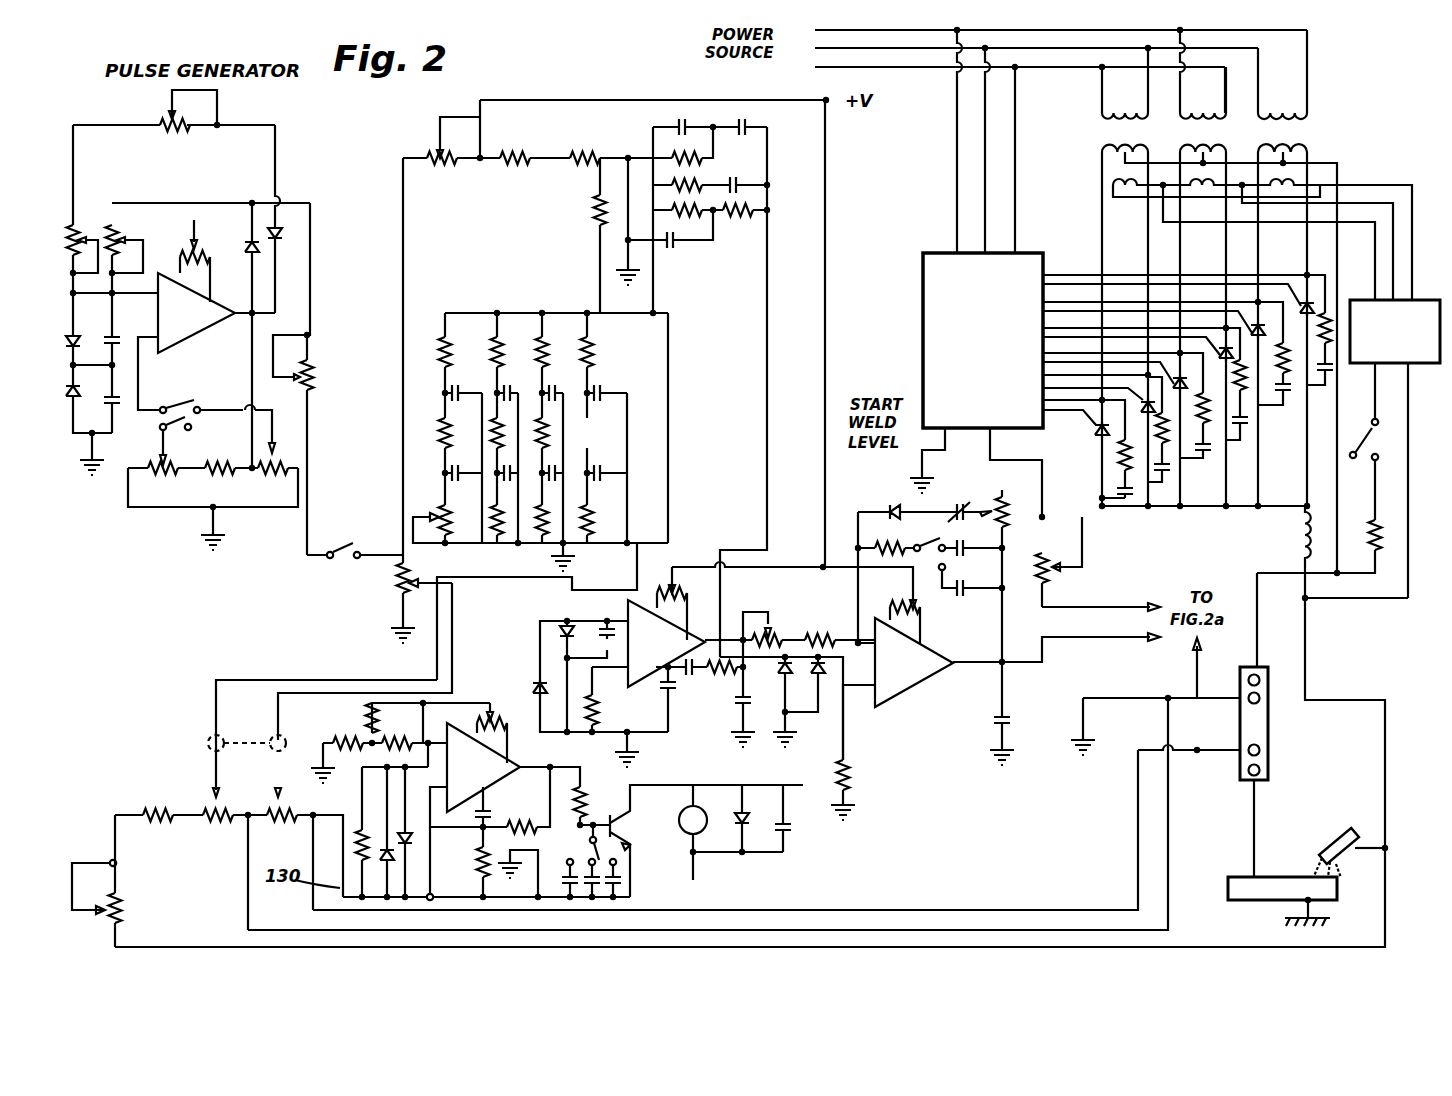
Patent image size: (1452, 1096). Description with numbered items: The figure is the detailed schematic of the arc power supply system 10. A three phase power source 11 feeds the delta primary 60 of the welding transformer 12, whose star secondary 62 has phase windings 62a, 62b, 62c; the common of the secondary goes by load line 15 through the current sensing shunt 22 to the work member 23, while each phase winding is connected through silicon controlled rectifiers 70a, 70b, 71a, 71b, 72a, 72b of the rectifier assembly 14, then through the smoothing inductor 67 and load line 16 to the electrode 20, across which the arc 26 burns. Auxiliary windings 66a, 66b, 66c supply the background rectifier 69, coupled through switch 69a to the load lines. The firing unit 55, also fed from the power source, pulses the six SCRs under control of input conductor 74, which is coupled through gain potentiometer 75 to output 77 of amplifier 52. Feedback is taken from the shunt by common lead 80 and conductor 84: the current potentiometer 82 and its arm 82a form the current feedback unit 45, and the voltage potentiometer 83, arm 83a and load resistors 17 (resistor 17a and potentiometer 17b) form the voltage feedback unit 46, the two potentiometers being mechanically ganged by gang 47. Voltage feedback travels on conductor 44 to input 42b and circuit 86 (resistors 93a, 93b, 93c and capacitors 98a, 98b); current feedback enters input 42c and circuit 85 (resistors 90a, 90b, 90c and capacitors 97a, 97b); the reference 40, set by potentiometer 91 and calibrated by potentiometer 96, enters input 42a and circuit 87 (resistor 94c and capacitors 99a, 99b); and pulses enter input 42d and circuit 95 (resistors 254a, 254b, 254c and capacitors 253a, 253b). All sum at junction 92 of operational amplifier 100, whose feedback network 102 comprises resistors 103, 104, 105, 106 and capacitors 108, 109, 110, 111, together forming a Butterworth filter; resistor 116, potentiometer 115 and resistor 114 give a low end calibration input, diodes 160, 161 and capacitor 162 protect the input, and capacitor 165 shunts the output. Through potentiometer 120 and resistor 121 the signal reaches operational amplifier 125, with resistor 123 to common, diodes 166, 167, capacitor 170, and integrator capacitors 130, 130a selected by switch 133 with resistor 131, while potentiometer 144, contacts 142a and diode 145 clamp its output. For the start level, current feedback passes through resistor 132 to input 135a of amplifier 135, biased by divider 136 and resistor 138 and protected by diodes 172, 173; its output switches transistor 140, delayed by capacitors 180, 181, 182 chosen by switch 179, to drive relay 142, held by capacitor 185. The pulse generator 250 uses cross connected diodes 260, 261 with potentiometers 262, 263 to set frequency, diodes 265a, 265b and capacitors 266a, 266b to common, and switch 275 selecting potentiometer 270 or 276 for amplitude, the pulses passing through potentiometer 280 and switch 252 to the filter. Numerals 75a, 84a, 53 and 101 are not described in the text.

The pulse generator 250 is at (148, 552).
The potentiometer 263 is at (83, 227).
The potentiometer 262 is at (137, 240).
The diode 260 is at (246, 248).
The diode 261 is at (282, 236).
The diode 265a is at (134, 331).
The diode 265b is at (85, 422).
The capacitor 266a is at (128, 344).
The capacitor 266b is at (115, 388).
The selector switch 275 is at (213, 446).
The potentiometer 276 is at (155, 473).
The potentiometer 270 is at (283, 473).
The potentiometer 280 is at (298, 355).
The switch 252 is at (330, 560).
The reference set point voltage input 40 is at (367, 592).
The potentiometer 91 is at (398, 585).
The input circuit 95 is at (432, 575).
The first input 42a is at (462, 589).
The third input 42b is at (433, 668).
The second input 42c is at (458, 626).
The input 42d is at (385, 555).
The voltage feedback conductor 44 is at (210, 702).
The gang 47 is at (238, 741).
The three phase power source 11 is at (748, 78).
The potentiometer 96 is at (436, 166).
The resistor 114 is at (512, 156).
The potentiometer 115 is at (570, 156).
The resistor 116 is at (593, 222).
The feedback network 102 is at (748, 281).
The capacitor 108 is at (678, 121).
The capacitor 109 is at (748, 121).
The resistor 103 is at (679, 151).
The resistor 104 is at (679, 178).
The resistor 105 is at (679, 203).
The capacitor 110 is at (750, 185).
The resistor 106 is at (740, 212).
The capacitor 111 is at (675, 240).
The summing junction 92 is at (566, 312).
The resistor 254c is at (440, 336).
The capacitor 253b is at (462, 370).
The resistor 93c is at (514, 340).
The resistor 90c is at (559, 340).
The resistor 94c is at (606, 340).
The capacitor 98b is at (503, 391).
The capacitor 97b is at (548, 391).
The capacitor 99b is at (599, 391).
The resistor 254b is at (443, 430).
The resistor 93b is at (477, 428).
The capacitor 98a is at (482, 456).
The capacitor 253a is at (445, 470).
The resistor 90b is at (546, 421).
The resistor 254a is at (435, 505).
The resistor 93a is at (478, 511).
The capacitor 97a is at (556, 470).
The capacitor 99a is at (618, 468).
The resistor 90a is at (551, 505).
The input circuit 86 is at (477, 553).
The input circuit 85 is at (568, 580).
The input circuit 87 is at (618, 569).
The operational amplifier 100 is at (673, 620).
The diode 161 is at (565, 622).
The capacitor 162 is at (605, 622).
The diode 160 is at (537, 678).
The resistor 101 is at (592, 710).
The diode 166 is at (742, 666).
The capacitor 165 is at (743, 709).
The diode 167 is at (823, 684).
The resistor 123 is at (848, 780).
The potentiometer 120 is at (770, 626).
The resistor 121 is at (820, 632).
The resistor 131 is at (857, 546).
The diode 145 is at (892, 510).
The normally closed contacts 142a is at (960, 509).
The potentiometer 144 is at (1004, 508).
The selector switch 133 is at (925, 544).
The integrator capacitor 130 is at (978, 523).
The integration capacitor 130a is at (962, 594).
The operational amplifier 125 is at (958, 654).
The capacitor 170 is at (1005, 716).
The input conductor 74 is at (1046, 503).
The gain control potentiometer 75 is at (1050, 580).
The output conductor 75a is at (1119, 599).
The output 77 is at (1068, 643).
The conductor 84a is at (1190, 674).
The amplifier 52 is at (970, 473).
The firing unit 55 is at (998, 383).
The three phase delta primary 60 is at (1252, 118).
The secondary 62 is at (1248, 155).
The phase winding 62a is at (1103, 146).
The phase winding 62b is at (1180, 146).
The phase winding 62c is at (1305, 146).
The polyphase welding transformer 12 is at (1415, 165).
The auxiliary secondary winding 66a is at (1129, 196).
The auxiliary secondary winding 66b is at (1207, 190).
The auxiliary secondary winding 66c is at (1289, 190).
The background rectifier 69 is at (1417, 299).
The switch 69a is at (1367, 423).
The polyphase rectifier assembly 14 is at (1290, 455).
The silicon controlled rectifier 70a is at (1100, 416).
The silicon controlled rectifier 70b is at (1148, 391).
The silicon controlled rectifier 71a is at (1202, 348).
The silicon controlled rectifier 71b is at (1227, 333).
The silicon controlled rectifier 72a is at (1270, 317).
The silicon controlled rectifier 72b is at (1312, 290).
The smoothing and stabilizing inductor 67 is at (1305, 530).
The output lead 15 is at (1280, 570).
The output lead 16 is at (1393, 740).
The current sensing shunt 22 is at (1273, 736).
The conductor 84 is at (1140, 786).
The common lead 80 is at (1170, 800).
The work member 23 is at (1257, 903).
The electrode 20 is at (1339, 831).
The arc 26 is at (1312, 870).
The voltage divider network 136 is at (338, 721).
The negative input 135a is at (487, 721).
The operational amplifier 135 is at (508, 765).
The diode 173 is at (407, 835).
The resistor 138 is at (482, 863).
The switching transistor 140 is at (583, 815).
The transistor 53 is at (665, 841).
The multipositioned switch 179 is at (594, 842).
The timing capacitor 180 is at (568, 897).
The timing capacitor 181 is at (595, 900).
The timing capacitor 182 is at (616, 900).
The relay 142 is at (698, 803).
The capacitor 185 is at (788, 838).
The arc power supply system 10 is at (765, 893).
The current feedback unit 45 is at (290, 915).
The resistor 132 is at (348, 840).
The diode 172 is at (385, 900).
The load resistors 17 is at (42, 843).
The resistor 17a is at (155, 807).
The potentiometer 17b is at (25, 910).
The voltage feedback unit 46 is at (193, 915).
The voltage feedback potentiometer 83 is at (215, 818).
The arm 83a is at (216, 791).
The current potentiometer 82 is at (275, 818).
The movable arm 82a is at (283, 788).